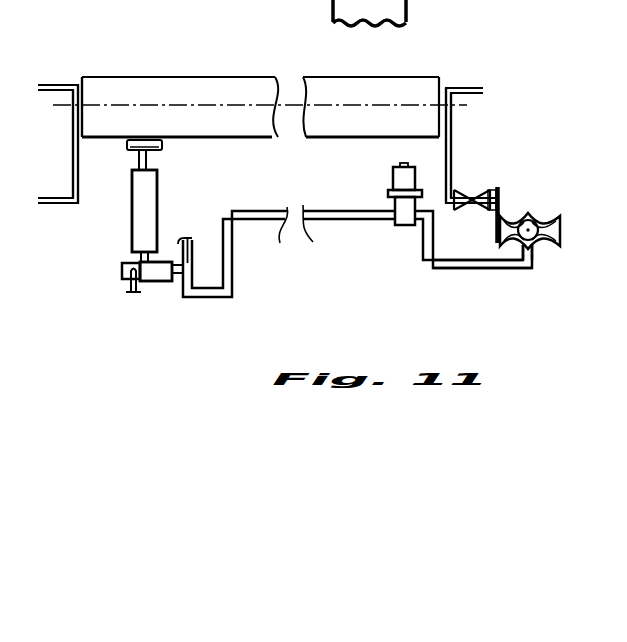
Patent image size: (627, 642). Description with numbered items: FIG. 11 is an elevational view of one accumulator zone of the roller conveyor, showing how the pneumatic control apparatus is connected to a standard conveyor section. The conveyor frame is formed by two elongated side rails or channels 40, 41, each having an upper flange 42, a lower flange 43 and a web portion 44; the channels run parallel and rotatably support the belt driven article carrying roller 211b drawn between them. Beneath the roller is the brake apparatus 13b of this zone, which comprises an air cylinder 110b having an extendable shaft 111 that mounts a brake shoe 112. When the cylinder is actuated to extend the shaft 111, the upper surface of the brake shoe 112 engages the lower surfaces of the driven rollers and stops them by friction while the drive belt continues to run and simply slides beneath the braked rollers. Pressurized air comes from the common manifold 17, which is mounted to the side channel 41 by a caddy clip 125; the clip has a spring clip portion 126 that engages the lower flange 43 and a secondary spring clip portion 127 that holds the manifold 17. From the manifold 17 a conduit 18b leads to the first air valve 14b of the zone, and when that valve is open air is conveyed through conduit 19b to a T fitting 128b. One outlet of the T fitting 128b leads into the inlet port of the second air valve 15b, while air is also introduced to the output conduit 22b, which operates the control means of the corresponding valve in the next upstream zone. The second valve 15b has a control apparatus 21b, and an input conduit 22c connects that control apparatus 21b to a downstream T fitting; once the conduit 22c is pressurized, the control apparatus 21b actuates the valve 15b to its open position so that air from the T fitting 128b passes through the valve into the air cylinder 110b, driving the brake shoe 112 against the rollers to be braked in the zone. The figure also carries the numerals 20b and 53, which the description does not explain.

The side channel 40 is at (68, 41).
The side channel 41 is at (462, 81).
The upper flange 42 is at (38, 87).
The lower flange 43 is at (42, 203).
The web portion 44 is at (73, 175).
The roll end 53 is at (88, 104).
The driven article carrying roller 211b is at (165, 84).
The brake shoe 112 is at (163, 146).
The extendable shaft 111 is at (148, 160).
The air cylinder 110b is at (140, 199).
The brake apparatus 13b is at (104, 209).
The second air valve 15b is at (163, 283).
The valve body 20b is at (137, 254).
The control apparatus 21b is at (123, 274).
The input conduit 22c is at (133, 297).
The output conduit 22b is at (190, 236).
The T fitting 128b is at (192, 268).
The conduit 19b is at (281, 241).
The first air valve 14b is at (394, 225).
The conduit 18b is at (442, 269).
The caddy clip 125 is at (503, 249).
The spring clip portion 126 is at (478, 193).
The common manifold 17 is at (530, 227).
The secondary spring clip portion 127 is at (548, 247).